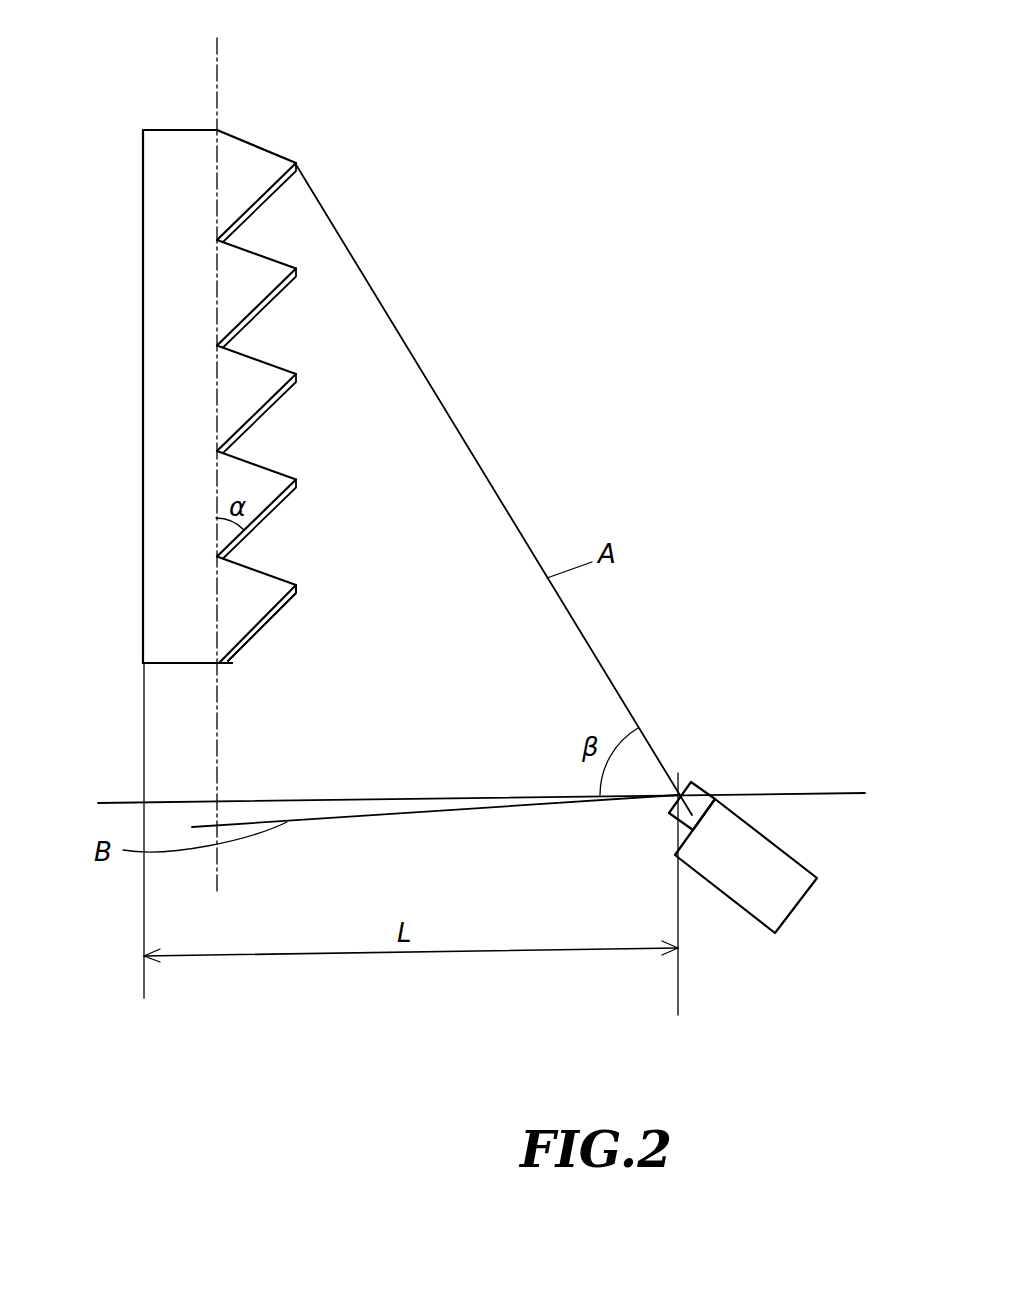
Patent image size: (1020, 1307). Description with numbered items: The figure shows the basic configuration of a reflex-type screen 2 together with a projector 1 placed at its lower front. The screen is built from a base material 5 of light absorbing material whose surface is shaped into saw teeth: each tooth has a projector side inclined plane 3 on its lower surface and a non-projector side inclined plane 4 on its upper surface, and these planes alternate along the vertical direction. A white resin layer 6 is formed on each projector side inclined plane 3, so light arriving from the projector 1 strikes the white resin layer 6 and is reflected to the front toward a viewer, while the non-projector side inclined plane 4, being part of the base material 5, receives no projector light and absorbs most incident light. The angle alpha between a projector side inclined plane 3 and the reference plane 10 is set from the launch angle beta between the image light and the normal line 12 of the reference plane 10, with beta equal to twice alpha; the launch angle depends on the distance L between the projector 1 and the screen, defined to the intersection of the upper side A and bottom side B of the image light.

The projector 1 is at (790, 872).
The reflex-type screen 2 is at (121, 576).
The projector side inclined plane 3 is at (247, 645).
The non-projector side inclined plane 4 is at (283, 580).
The base material 5 is at (153, 245).
The white resin layer 6 is at (297, 600).
The reference plane 10 is at (212, 53).
The normal line 12 is at (778, 793).